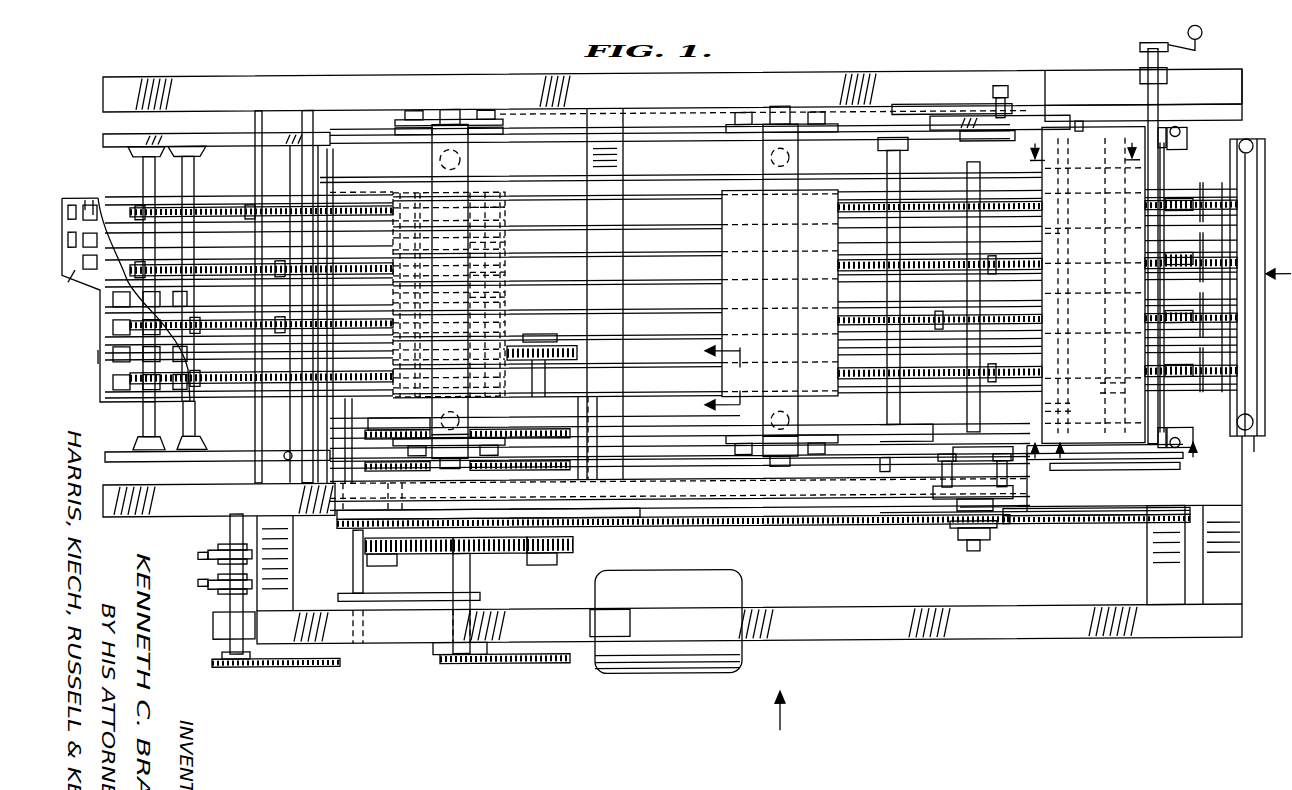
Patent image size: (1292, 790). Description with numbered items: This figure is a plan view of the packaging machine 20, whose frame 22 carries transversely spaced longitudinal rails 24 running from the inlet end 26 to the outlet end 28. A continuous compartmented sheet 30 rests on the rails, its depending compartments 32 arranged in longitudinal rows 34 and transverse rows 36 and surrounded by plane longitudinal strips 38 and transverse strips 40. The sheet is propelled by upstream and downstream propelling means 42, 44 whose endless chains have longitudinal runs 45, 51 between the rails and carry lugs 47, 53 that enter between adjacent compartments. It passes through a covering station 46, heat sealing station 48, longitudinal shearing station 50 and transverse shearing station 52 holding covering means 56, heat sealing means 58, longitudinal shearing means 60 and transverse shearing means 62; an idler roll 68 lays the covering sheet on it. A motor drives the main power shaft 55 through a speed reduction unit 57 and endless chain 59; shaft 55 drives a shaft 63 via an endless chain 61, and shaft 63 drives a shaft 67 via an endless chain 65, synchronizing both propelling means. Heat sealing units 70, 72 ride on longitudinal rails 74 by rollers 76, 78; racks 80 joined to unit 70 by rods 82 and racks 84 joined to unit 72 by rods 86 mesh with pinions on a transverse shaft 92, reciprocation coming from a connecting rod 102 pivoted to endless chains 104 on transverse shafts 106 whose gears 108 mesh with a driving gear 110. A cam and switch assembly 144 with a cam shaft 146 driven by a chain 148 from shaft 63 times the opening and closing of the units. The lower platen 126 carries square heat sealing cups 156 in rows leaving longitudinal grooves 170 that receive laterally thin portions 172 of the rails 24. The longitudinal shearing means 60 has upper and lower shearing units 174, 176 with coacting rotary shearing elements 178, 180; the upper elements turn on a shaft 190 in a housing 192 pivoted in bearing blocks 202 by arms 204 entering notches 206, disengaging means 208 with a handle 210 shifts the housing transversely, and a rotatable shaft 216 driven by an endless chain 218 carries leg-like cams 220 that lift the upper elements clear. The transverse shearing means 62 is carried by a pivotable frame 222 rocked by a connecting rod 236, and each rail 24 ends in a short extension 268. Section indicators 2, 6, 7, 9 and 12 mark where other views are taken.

The section line 2 is at (779, 725).
The section line 6 is at (710, 377).
The section line 7 is at (1114, 470).
The section line 9 is at (1076, 152).
The view arrow 12 is at (1279, 263).
The packaging machine 20 is at (805, 58).
The frame 22 is at (1048, 72).
The longitudinal rails 24 is at (226, 200).
The inlet end 26 is at (99, 74).
The outlet end 28 is at (1254, 72).
The compartmented sheet 30 is at (194, 303).
The compartments 32 is at (112, 330).
The longitudinal rows 34 is at (98, 357).
The transverse rows 36 is at (93, 200).
The longitudinal strips 38 is at (88, 275).
The transverse strips 40 is at (88, 205).
The upstream propelling means 42 is at (260, 200).
The downstream propelling means 44 is at (1020, 205).
The longitudinal runs 45 is at (210, 212).
The covering station 46 is at (315, 115).
The lugs 47 is at (208, 268).
The heat sealing station 48 is at (712, 105).
The longitudinal shearing station 50 is at (1100, 74).
The longitudinal runs 51 is at (992, 318).
The transverse shearing station 52 is at (1258, 142).
The propelling lugs 53 is at (940, 317).
The main power shaft 55 is at (470, 586).
The covering means 56 is at (320, 190).
The speed reduction unit 57 is at (590, 600).
The heat sealing means 58 is at (470, 188).
The endless chain 59 is at (510, 668).
The longitudinal shearing means 60 is at (1060, 494).
The endless chain 61 is at (395, 570).
The transverse shearing means 62 is at (1262, 208).
The shaft 63 is at (353, 577).
The endless chain 65 is at (765, 530).
The shaft 67 is at (1175, 522).
The idler roll 68 is at (335, 190).
The upstream heat sealing unit 70 is at (505, 195).
The downstream heat sealing unit 72 is at (742, 198).
The longitudinal rails 74 is at (632, 131).
The rollers 76 is at (400, 147).
The rollers 78 is at (740, 130).
The racks 80 is at (898, 110).
The rods 82 is at (668, 117).
The racks 84 is at (1016, 128).
The rods 86 is at (865, 118).
The transverse shaft 92 is at (967, 345).
The connecting rod 102 is at (610, 445).
The endless chains 104 is at (555, 432).
The transverse shafts 106 is at (345, 530).
The gears 108 is at (560, 345).
The driving gear 110 is at (478, 558).
The lower platen 126 is at (505, 299).
The cam and switch assembly 144 is at (205, 598).
The cam shaft 146 is at (228, 530).
The chain 148 is at (290, 668).
The heat sealing cups 156 is at (505, 255).
The longitudinal grooves 170 is at (512, 220).
The laterally thin portions 172 is at (660, 225).
The upper longitudinal shearing unit 174 is at (1110, 398).
The lower longitudinal shearing unit 176 is at (1138, 382).
The upper shearing elements 178 is at (1100, 265).
The lower shearing elements 180 is at (1042, 240).
The shaft 190 is at (1045, 410).
The housing 192 is at (1120, 466).
The bearing blocks 202 is at (1185, 135).
The arms 204 is at (1160, 128).
The notches 206 is at (1150, 135).
The disengaging means 208 is at (1203, 40).
The handle 210 is at (1195, 51).
The rotatable shaft 216 is at (1060, 418).
The endless chain 218 is at (1115, 530).
The leg-like cams 220 is at (1082, 128).
The frame 222 is at (1254, 444).
The connecting rod 236 is at (676, 160).
The short extension 268 is at (1233, 232).